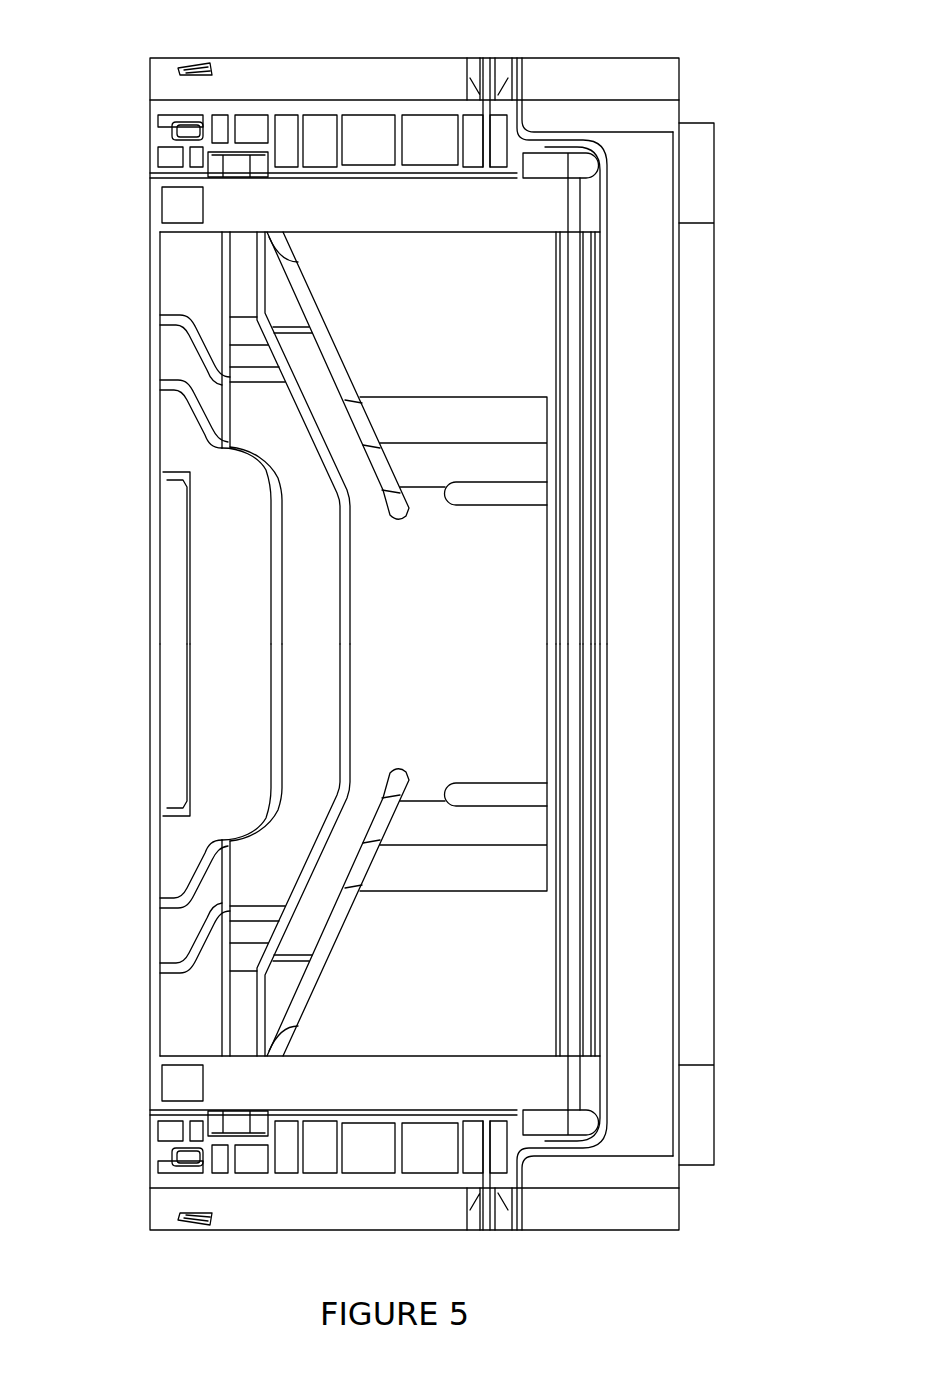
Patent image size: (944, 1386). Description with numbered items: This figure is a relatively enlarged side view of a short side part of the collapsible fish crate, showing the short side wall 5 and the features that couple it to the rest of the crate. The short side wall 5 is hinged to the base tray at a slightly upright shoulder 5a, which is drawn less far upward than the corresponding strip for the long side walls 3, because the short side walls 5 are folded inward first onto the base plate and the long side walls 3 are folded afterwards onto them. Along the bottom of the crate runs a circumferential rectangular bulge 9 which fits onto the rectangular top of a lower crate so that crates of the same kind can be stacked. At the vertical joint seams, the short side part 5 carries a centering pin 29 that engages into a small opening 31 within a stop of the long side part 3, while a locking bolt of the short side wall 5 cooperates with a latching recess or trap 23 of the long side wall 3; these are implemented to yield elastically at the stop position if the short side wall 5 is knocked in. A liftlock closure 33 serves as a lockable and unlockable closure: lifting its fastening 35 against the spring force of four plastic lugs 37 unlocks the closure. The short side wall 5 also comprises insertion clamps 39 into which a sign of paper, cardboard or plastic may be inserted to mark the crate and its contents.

The long side wall 3 is at (357, 75).
The short side wall 5 is at (527, 296).
The shoulder 5a is at (648, 534).
The circumferential rectangular bulge 9 is at (700, 912).
The latching recess or trap 23 is at (144, 644).
The centering pin 29 is at (170, 122).
The small opening 31 is at (168, 138).
The liftlock closure 33 is at (170, 644).
The fastening 35 is at (270, 798).
The plastic lug 37 is at (185, 347).
The insertion clamp 39 is at (472, 495).